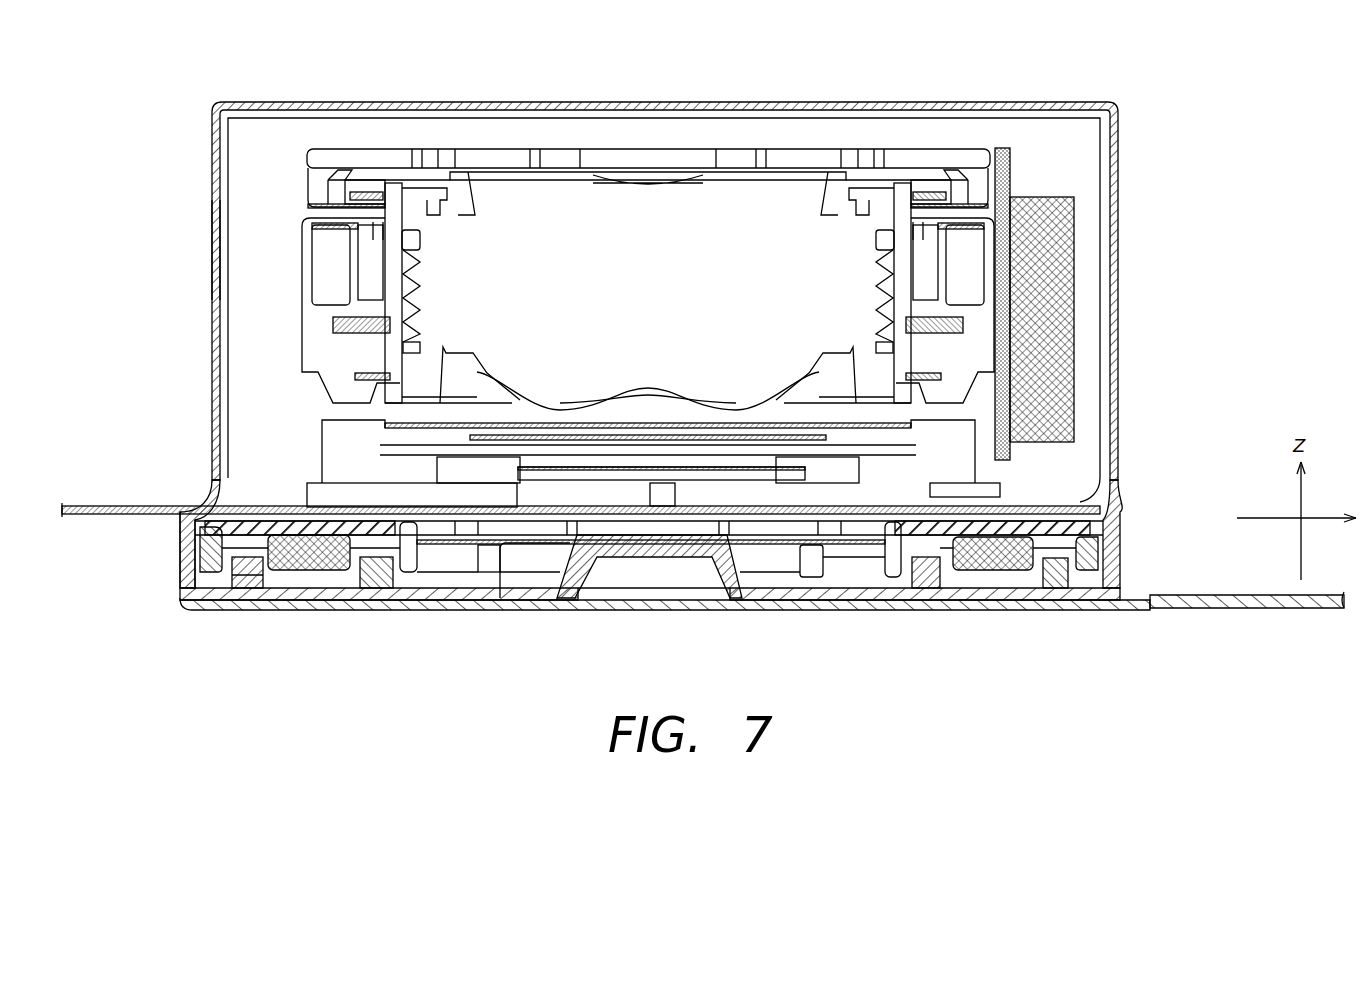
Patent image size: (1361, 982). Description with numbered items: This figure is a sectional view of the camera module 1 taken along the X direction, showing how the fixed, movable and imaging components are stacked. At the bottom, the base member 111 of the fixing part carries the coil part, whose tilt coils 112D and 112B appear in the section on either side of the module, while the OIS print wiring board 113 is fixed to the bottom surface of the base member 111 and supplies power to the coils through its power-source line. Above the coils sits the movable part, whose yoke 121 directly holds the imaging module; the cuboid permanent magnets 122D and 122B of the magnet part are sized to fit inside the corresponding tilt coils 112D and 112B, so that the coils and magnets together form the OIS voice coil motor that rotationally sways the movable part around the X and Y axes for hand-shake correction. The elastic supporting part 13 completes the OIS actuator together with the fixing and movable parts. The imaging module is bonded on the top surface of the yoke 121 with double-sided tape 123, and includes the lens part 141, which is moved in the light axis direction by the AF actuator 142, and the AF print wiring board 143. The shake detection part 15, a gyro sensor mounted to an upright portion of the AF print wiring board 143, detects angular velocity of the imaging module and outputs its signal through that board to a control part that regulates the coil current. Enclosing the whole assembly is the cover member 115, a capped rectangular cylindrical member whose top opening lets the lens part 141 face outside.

The camera module 1 is at (1162, 154).
The cover member 115 is at (212, 190).
The lens part 141 is at (470, 240).
The AF actuator 142 is at (300, 292).
The AF print wiring board 143 is at (100, 504).
The double-sided tape 123 is at (320, 506).
The shake detection part 15 is at (1058, 280).
The elastic supporting part 13 is at (506, 600).
The OIS print wiring board 113 is at (693, 610).
The base member 111 is at (790, 610).
The yoke 121 is at (247, 590).
The permanent magnet 122D is at (305, 572).
The tilt coil 112D is at (378, 590).
The permanent magnet 122B is at (990, 572).
The tilt coil 112B is at (1055, 590).